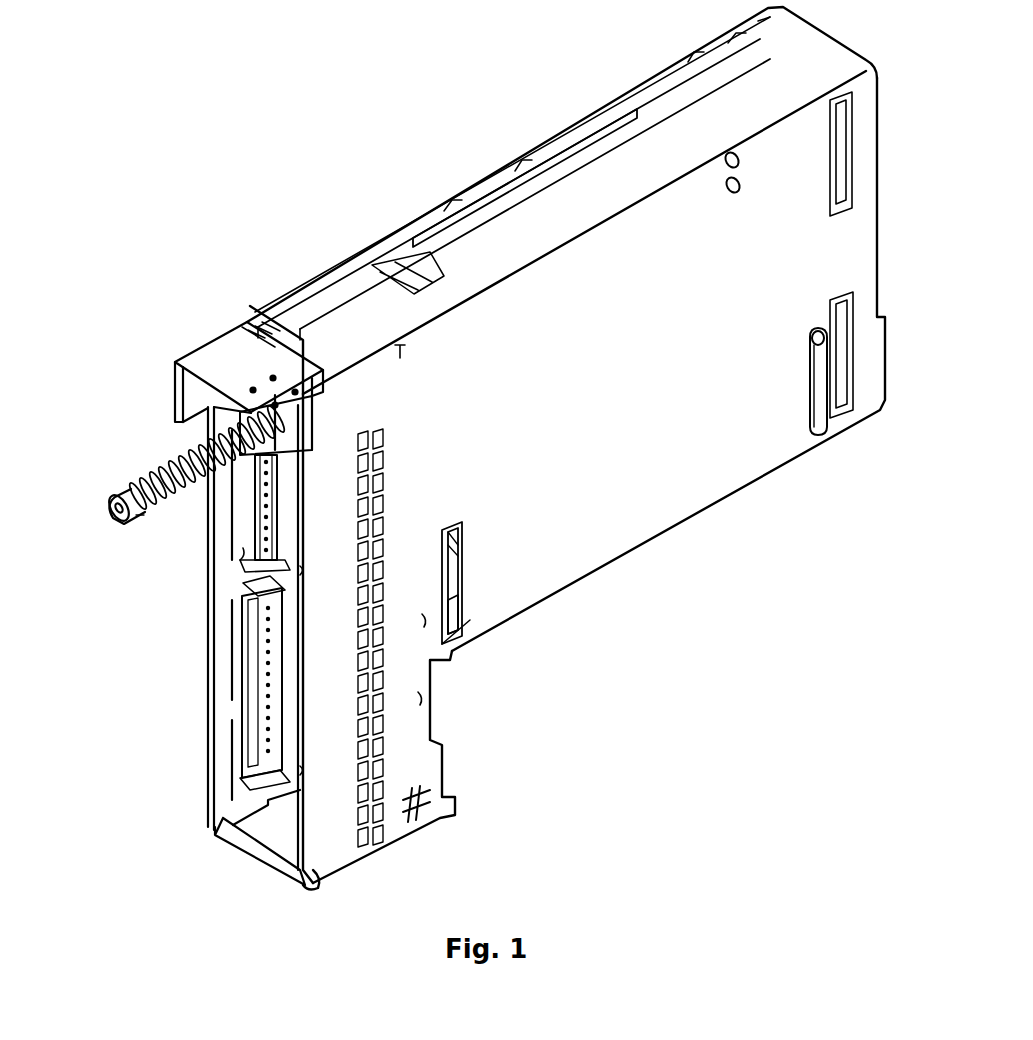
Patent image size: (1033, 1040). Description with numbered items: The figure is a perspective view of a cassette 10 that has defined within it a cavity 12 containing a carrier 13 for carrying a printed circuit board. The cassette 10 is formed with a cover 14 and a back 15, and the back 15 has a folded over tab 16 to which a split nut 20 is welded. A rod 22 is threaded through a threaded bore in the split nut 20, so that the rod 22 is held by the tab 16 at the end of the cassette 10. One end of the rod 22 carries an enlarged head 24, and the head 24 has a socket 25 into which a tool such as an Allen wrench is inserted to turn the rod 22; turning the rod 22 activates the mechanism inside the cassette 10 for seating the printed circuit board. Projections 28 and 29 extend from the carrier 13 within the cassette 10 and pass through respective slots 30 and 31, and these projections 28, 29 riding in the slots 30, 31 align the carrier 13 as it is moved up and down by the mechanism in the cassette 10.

The cassette 10 is at (245, 108).
The cavity 12 is at (233, 798).
The carrier 13 is at (235, 618).
The cover 14 is at (657, 500).
The back 15 is at (350, 250).
The folded over tab 16 is at (222, 358).
The split nut 20 is at (290, 423).
The rod 22 is at (150, 470).
The enlarged head 24 is at (140, 515).
The socket 25 is at (112, 510).
The projection 28 is at (455, 532).
The projection 29 is at (817, 342).
The slot 30 is at (455, 608).
The slot 31 is at (819, 412).